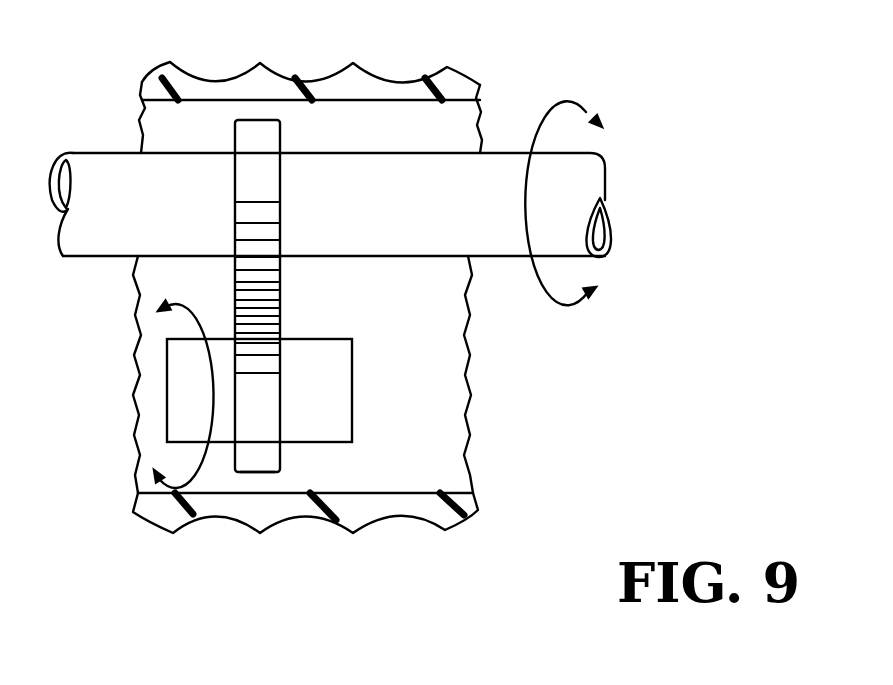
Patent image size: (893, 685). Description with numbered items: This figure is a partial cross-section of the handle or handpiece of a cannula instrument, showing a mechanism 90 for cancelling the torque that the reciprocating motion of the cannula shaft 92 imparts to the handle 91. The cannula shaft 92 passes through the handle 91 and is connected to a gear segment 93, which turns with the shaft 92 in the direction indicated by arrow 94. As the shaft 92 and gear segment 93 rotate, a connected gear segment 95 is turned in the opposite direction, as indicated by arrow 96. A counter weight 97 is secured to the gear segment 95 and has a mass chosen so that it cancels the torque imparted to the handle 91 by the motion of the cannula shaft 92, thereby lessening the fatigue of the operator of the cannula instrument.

The mechanism 90 is at (114, 350).
The handle 91 is at (400, 80).
The cannula shaft 92 is at (100, 153).
The gear segment 93 is at (248, 120).
The arrow 94 is at (560, 102).
The gear segment 95 is at (277, 475).
The arrow 96 is at (202, 493).
The counter weight 97 is at (353, 385).